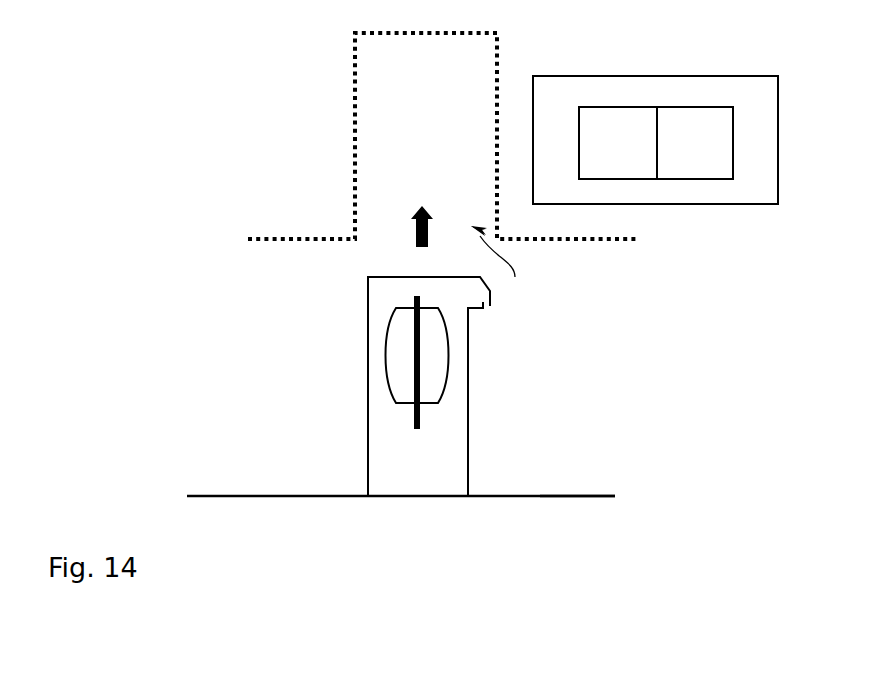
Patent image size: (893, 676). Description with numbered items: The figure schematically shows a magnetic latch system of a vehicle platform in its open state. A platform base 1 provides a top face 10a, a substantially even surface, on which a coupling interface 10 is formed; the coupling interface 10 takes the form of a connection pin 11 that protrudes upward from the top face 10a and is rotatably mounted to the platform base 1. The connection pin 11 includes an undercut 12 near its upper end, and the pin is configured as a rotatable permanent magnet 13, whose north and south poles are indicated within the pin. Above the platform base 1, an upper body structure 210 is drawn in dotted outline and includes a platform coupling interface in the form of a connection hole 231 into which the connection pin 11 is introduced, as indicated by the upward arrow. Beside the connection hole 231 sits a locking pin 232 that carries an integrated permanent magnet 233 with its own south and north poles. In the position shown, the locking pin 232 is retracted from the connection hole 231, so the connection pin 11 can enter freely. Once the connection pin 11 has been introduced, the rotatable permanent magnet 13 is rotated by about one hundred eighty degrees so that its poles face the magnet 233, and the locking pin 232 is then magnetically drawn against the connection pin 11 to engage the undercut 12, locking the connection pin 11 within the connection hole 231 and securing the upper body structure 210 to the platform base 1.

The upper body structure 210 is at (323, 181).
The locking pin 232 is at (692, 75).
The integrated permanent magnet 233 is at (706, 180).
The connection hole 231 is at (512, 265).
The coupling interface 10 is at (379, 386).
The connection pin 11 is at (367, 303).
The undercut 12 is at (484, 306).
The rotatable permanent magnet 13 is at (385, 370).
The top face 10a is at (572, 494).
The platform base 1 is at (532, 497).